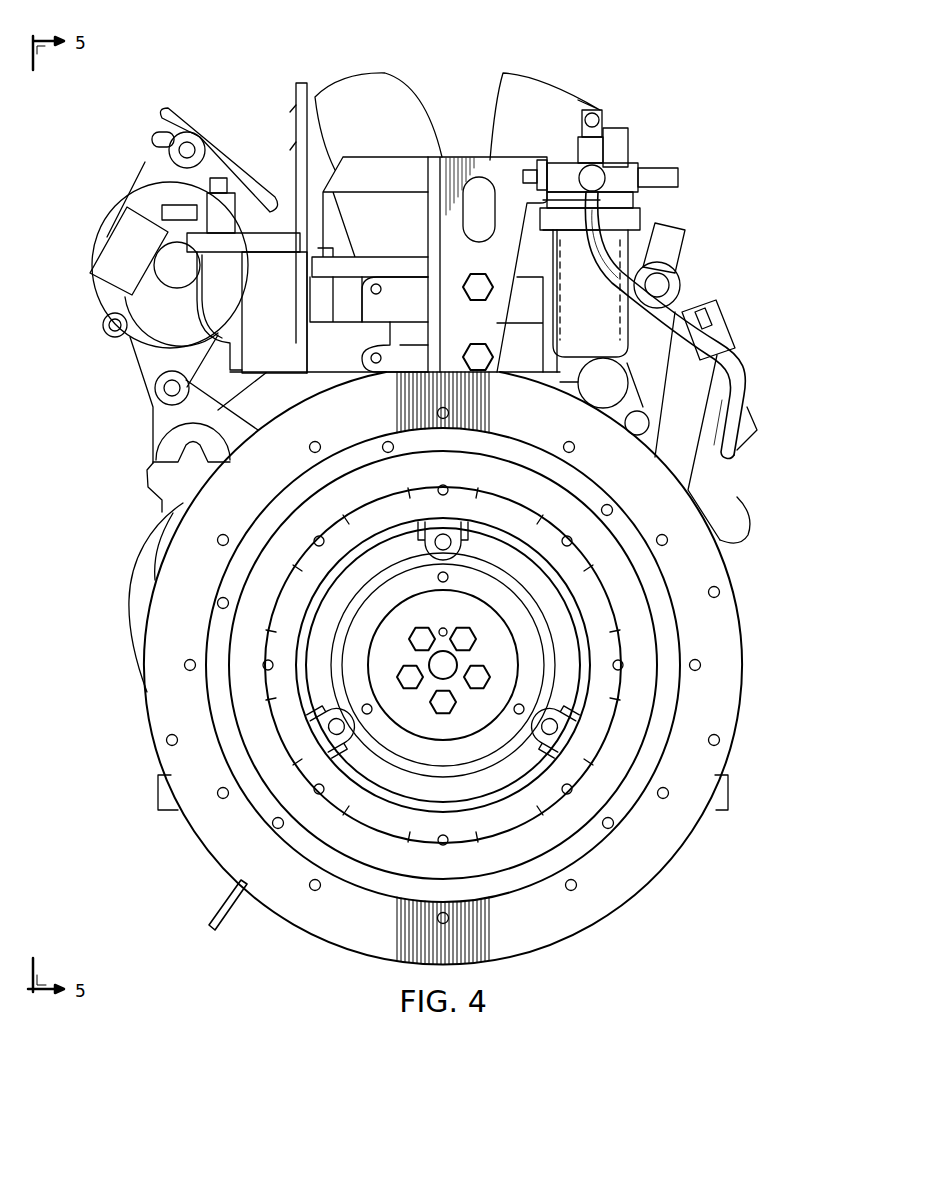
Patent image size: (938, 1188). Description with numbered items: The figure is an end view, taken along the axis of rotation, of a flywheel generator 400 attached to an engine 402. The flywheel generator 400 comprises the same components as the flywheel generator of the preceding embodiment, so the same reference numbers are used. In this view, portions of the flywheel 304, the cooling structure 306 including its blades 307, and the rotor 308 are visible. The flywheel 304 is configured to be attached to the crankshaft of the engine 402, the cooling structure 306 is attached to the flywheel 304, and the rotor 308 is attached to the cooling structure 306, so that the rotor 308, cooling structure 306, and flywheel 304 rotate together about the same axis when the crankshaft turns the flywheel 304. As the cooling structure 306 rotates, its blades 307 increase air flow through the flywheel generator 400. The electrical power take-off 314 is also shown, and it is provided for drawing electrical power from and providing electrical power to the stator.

The flywheel generator 400 is at (740, 612).
The rotor 308 is at (718, 661).
The cooling structure 306 is at (640, 693).
The blades 307 is at (272, 693).
The flywheel 304 is at (505, 773).
The electrical power take-off 314 is at (212, 905).
The engine 402 is at (482, 157).